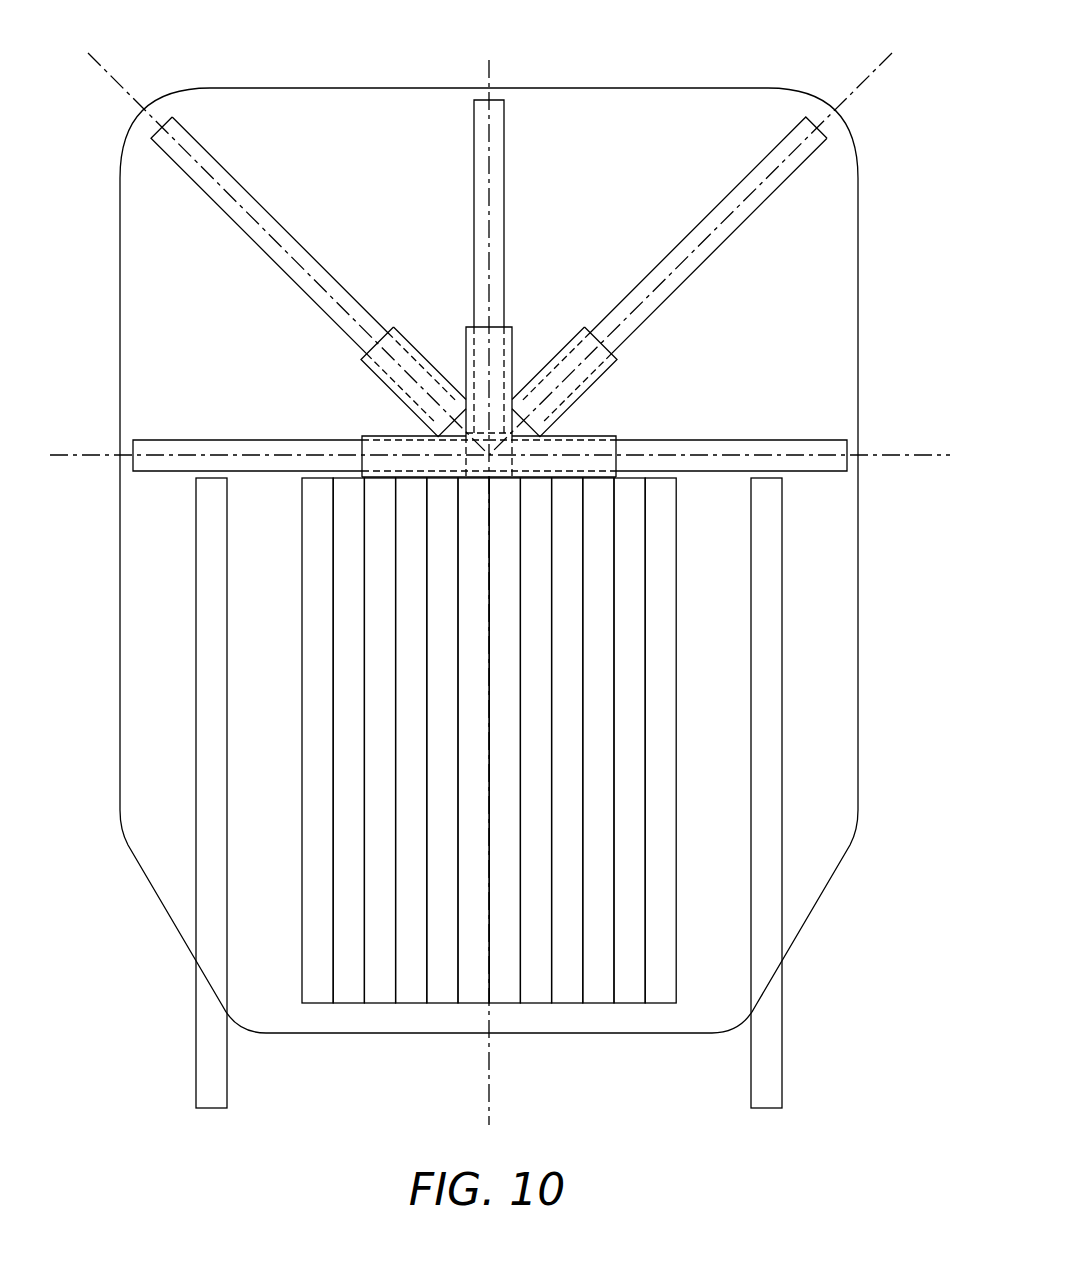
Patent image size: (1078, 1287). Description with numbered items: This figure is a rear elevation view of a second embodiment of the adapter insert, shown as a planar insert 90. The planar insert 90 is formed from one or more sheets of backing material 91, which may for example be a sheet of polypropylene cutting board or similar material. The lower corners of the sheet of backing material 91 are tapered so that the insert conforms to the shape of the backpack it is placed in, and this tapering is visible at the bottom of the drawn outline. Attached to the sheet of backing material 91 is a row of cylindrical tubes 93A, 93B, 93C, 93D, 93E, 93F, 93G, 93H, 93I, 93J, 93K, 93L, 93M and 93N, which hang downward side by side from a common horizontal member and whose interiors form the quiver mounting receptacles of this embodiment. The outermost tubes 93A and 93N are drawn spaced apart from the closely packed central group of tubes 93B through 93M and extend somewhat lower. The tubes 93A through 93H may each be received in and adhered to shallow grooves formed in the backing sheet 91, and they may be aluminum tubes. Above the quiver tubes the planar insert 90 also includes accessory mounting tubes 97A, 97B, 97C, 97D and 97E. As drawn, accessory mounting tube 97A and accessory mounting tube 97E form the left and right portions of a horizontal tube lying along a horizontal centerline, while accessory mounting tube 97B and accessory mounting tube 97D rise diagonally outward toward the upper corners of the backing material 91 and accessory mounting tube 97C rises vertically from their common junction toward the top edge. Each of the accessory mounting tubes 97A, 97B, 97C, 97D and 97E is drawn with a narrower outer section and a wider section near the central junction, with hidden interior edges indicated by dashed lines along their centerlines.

The planar insert 90 is at (772, 42).
The sheet of backing material 91 is at (594, 125).
The cylindrical tube 93A is at (213, 1105).
The cylindrical tube 93B is at (313, 992).
The cylindrical tube 93C is at (352, 987).
The cylindrical tube 93D is at (382, 985).
The cylindrical tube 93E is at (413, 985).
The cylindrical tube 93F is at (442, 985).
The cylindrical tube 93G is at (477, 985).
The cylindrical tube 93H is at (501, 985).
The cylindrical tube 93I is at (536, 985).
The cylindrical tube 93J is at (565, 985).
The cylindrical tube 93K is at (596, 985).
The cylindrical tube 93L is at (626, 985).
The cylindrical tube 93M is at (665, 990).
The cylindrical tube 93N is at (765, 1105).
The accessory mounting tube 97A is at (142, 465).
The accessory mounting tube 97B is at (187, 137).
The accessory mounting tube 97C is at (496, 122).
The accessory mounting tube 97D is at (803, 152).
The accessory mounting tube 97E is at (825, 445).